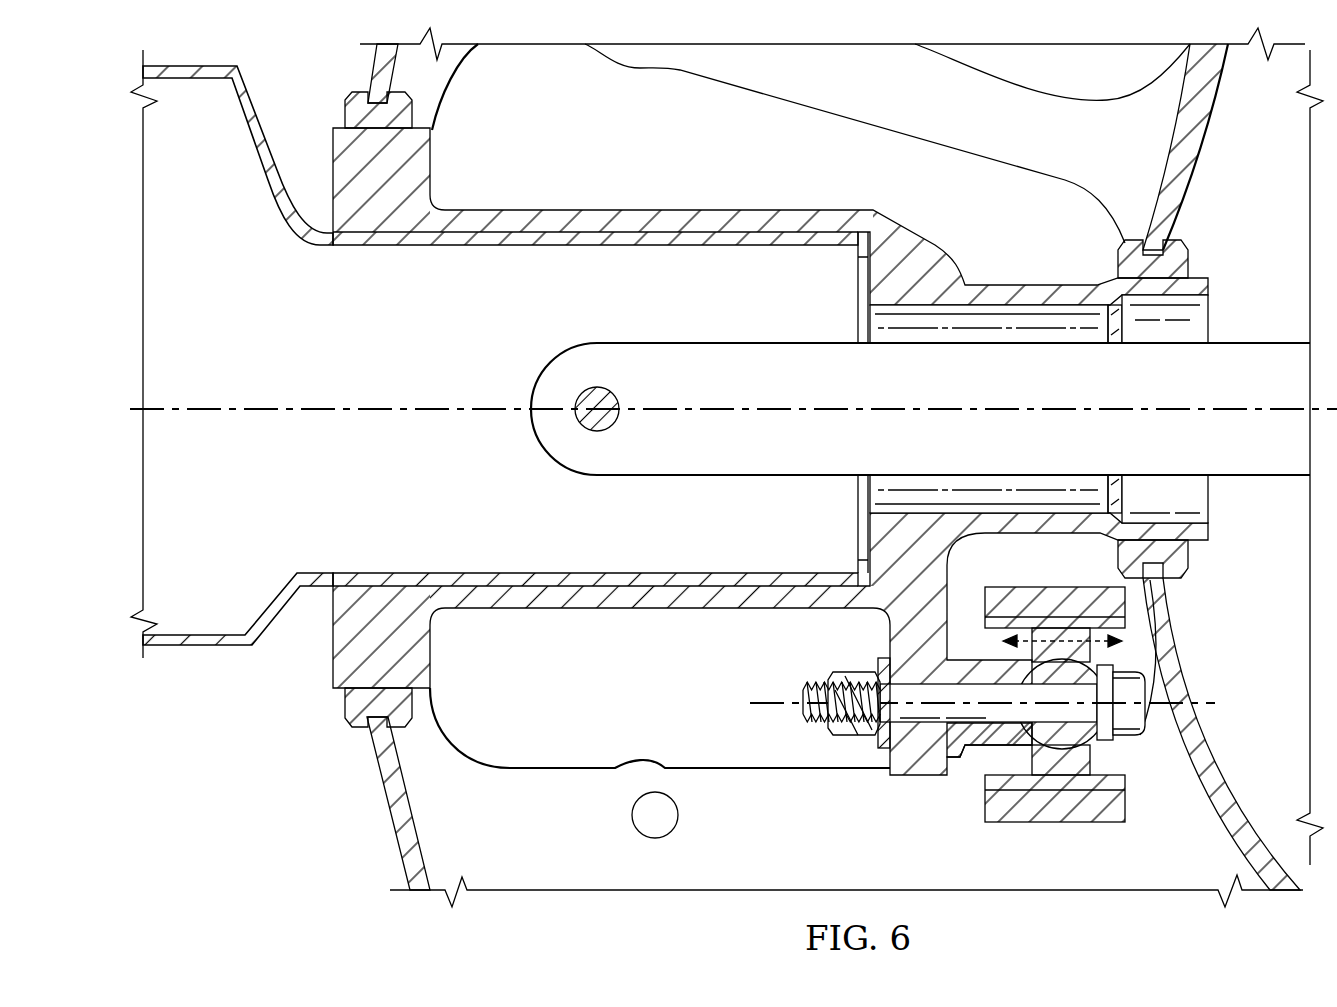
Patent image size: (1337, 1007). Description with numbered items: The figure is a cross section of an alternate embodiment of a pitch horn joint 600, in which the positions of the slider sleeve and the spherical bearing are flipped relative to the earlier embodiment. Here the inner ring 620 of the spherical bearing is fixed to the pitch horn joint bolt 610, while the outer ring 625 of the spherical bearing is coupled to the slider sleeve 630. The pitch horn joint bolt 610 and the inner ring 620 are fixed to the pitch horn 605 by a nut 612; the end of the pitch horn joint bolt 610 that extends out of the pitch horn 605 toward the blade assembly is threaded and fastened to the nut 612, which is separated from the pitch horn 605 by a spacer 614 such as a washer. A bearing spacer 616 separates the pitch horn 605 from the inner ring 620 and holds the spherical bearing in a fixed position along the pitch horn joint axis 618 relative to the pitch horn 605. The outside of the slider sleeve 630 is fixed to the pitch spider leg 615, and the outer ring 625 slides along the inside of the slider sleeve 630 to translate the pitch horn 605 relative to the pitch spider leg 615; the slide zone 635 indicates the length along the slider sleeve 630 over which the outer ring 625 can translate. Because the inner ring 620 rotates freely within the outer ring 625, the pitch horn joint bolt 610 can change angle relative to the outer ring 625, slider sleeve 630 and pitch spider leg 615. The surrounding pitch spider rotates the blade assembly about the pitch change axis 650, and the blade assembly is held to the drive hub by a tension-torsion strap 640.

The pitch horn joint 600 is at (974, 851).
The pitch horn 605 is at (910, 762).
The pitch horn joint bolt 610 is at (803, 715).
The nut 612 is at (847, 737).
The spacer 614 is at (880, 658).
The pitch spider leg 615 is at (1030, 600).
The bearing spacer 616 is at (985, 733).
The pitch horn joint axis 618 is at (765, 702).
The inner ring 620 is at (1085, 745).
The outer ring 625 is at (1043, 768).
The slider sleeve 630 is at (1085, 625).
The slide zone 635 is at (1060, 675).
The tension-torsion strap 640 is at (752, 343).
The pitch change axis 650 is at (410, 408).